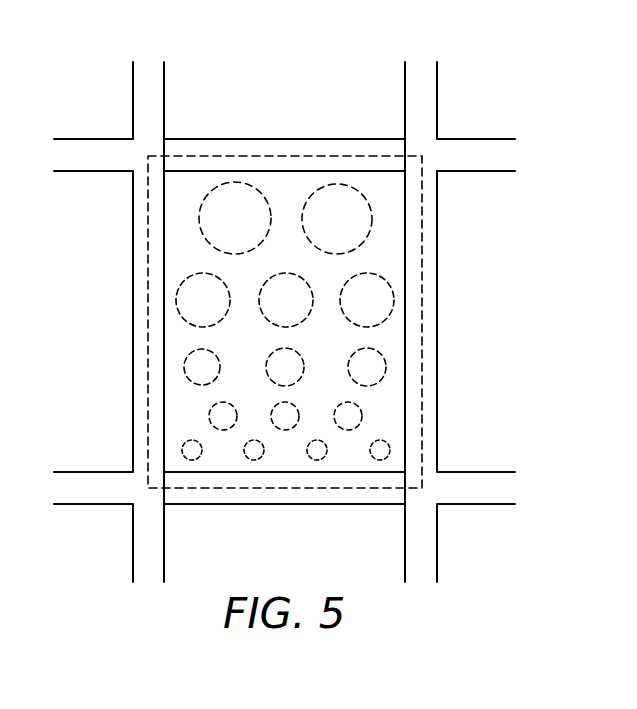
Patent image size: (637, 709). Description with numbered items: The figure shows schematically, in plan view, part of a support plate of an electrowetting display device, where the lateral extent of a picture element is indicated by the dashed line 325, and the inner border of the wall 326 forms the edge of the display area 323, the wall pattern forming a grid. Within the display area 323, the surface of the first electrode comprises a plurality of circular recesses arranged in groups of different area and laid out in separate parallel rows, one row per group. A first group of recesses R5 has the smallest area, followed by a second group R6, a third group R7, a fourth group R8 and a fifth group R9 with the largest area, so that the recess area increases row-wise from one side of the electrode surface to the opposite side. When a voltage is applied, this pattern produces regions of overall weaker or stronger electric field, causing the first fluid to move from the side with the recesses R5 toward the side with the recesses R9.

The display area 323 is at (392, 213).
The dashed line indicating lateral extent of picture element 325 is at (424, 310).
The inner border of wall 326 is at (405, 392).
The first group of recesses R5 is at (253, 455).
The second group of recesses R6 is at (280, 413).
The third group of recesses R7 is at (277, 365).
The fourth group of recesses R8 is at (262, 299).
The fifth group of recesses R9 is at (308, 205).